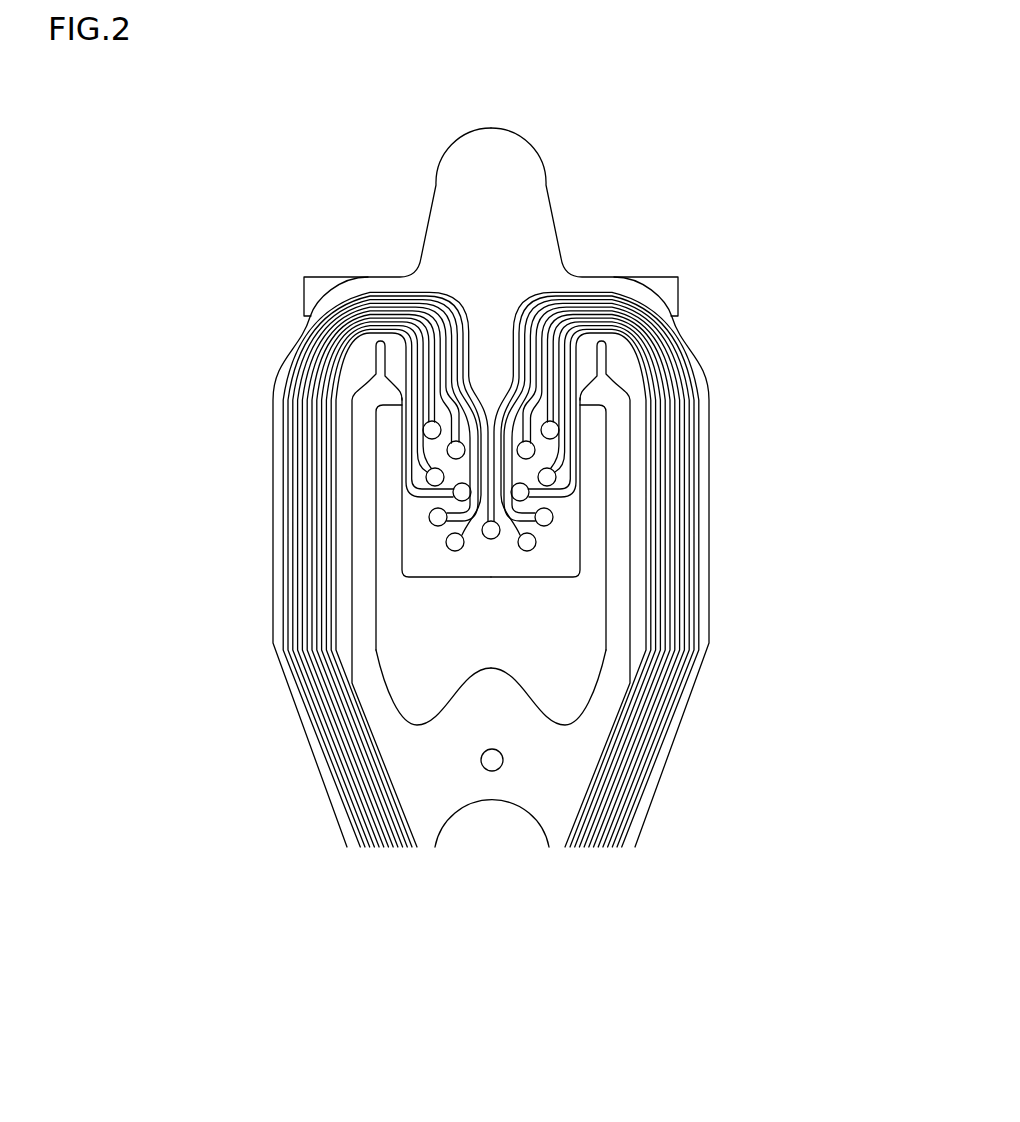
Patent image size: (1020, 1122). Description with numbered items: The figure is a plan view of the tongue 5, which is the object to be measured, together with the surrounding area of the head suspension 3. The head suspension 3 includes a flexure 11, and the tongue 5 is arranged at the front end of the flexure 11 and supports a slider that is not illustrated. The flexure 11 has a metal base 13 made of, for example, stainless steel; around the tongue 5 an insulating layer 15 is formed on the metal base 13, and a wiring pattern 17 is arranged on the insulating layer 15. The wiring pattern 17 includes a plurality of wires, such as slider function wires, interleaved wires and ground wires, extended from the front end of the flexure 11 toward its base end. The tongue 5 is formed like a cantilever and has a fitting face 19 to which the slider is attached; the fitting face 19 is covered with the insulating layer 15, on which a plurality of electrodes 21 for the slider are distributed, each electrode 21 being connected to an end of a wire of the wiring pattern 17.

The head suspension 3 is at (647, 167).
The tongue 5 is at (400, 553).
The flexure 11 is at (720, 613).
The metal base 13 is at (439, 773).
The insulating layer 15 is at (652, 603).
The wiring pattern 17 is at (704, 437).
The fitting face 19 is at (572, 538).
The electrodes 21 is at (559, 426).